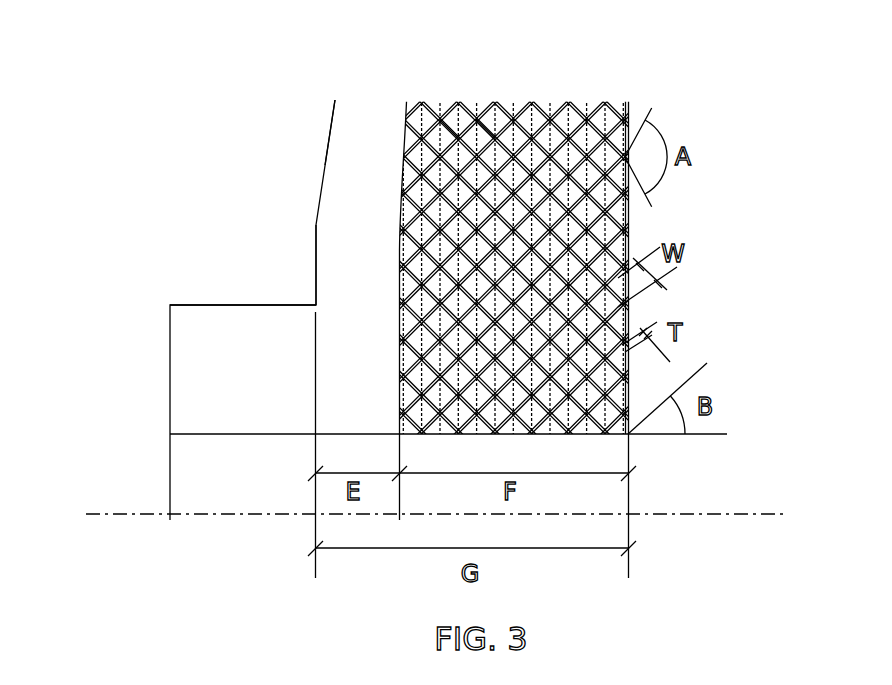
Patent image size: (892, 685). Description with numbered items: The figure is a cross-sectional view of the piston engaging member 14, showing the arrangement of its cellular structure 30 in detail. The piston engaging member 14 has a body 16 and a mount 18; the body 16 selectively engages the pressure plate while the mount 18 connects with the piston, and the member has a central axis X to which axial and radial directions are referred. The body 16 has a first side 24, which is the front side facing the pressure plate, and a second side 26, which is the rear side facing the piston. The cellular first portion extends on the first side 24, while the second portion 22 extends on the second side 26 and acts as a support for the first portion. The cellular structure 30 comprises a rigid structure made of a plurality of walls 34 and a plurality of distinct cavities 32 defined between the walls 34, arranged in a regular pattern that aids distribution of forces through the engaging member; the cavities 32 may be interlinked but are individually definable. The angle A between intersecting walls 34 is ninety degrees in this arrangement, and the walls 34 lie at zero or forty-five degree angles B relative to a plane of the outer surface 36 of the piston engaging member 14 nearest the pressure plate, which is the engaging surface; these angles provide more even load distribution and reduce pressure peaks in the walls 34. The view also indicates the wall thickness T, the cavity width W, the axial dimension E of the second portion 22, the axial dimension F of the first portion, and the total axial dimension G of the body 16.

The piston engaging member 14 is at (211, 101).
The body 16 is at (353, 86).
The mount 18 is at (153, 264).
The second portion 22 is at (340, 232).
The first side 24 is at (542, 145).
The second side 26 is at (236, 230).
The cellular structure 30 is at (492, 133).
The cavities 32 is at (452, 130).
The walls 34 is at (577, 436).
The outer surface 36 is at (631, 228).